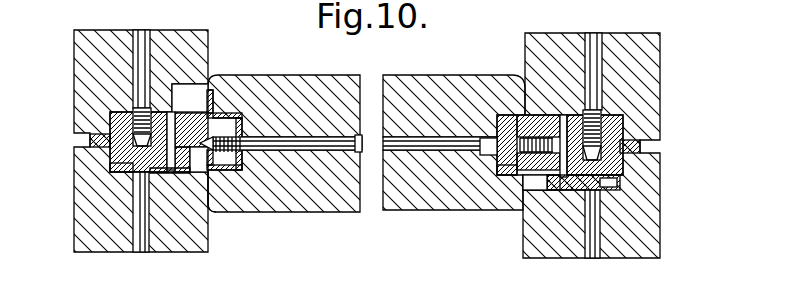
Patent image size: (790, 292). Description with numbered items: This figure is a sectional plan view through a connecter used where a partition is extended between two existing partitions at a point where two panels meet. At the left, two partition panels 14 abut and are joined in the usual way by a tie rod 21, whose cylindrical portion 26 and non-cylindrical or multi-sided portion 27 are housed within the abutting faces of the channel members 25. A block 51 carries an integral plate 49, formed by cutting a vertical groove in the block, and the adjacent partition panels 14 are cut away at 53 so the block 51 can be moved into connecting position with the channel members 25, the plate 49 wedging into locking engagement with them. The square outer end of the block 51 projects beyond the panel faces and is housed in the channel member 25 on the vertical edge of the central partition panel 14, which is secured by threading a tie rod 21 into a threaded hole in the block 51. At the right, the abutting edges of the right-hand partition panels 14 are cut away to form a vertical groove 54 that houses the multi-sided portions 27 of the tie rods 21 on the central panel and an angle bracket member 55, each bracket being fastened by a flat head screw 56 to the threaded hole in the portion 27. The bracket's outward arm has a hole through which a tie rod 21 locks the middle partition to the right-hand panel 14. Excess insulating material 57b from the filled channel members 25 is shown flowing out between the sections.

The partition panel 14 is at (74, 60).
The tie rod 21 is at (148, 31).
The channel member 25 is at (92, 138).
The cylindrical portion 26 is at (125, 160).
The non-cylindrical or multi-sided portion 27 is at (110, 118).
The plate 49 is at (178, 175).
The block 51 is at (226, 112).
The cut-away 53 is at (190, 97).
The vertical groove 54 is at (535, 188).
The angle bracket member 55 is at (557, 202).
The flat head screw 56 is at (526, 182).
The excess insulating material 57b is at (207, 190).